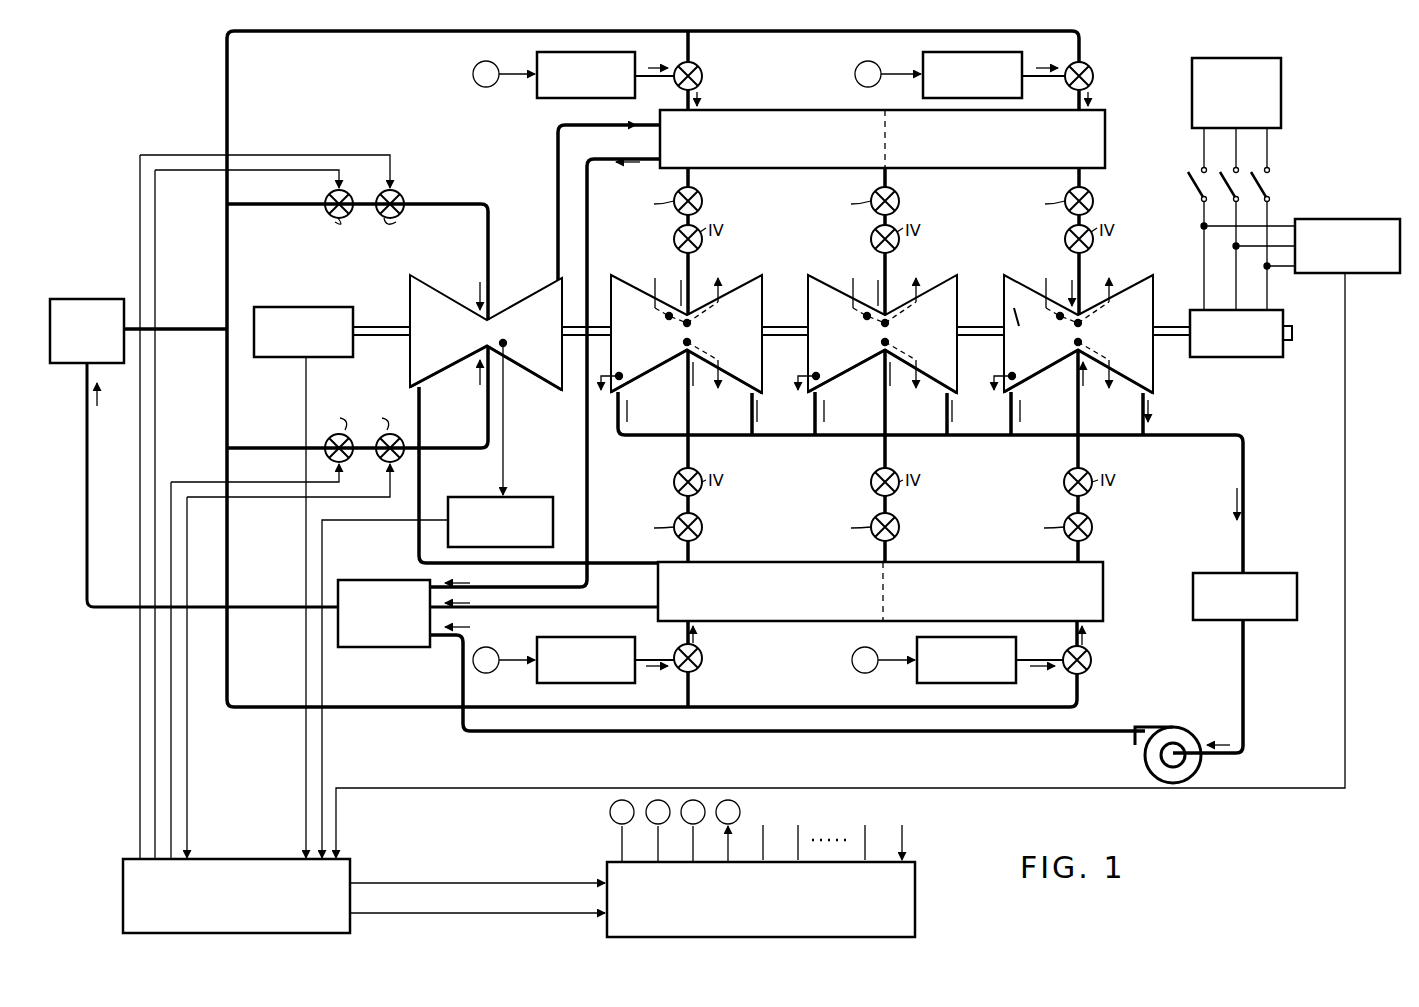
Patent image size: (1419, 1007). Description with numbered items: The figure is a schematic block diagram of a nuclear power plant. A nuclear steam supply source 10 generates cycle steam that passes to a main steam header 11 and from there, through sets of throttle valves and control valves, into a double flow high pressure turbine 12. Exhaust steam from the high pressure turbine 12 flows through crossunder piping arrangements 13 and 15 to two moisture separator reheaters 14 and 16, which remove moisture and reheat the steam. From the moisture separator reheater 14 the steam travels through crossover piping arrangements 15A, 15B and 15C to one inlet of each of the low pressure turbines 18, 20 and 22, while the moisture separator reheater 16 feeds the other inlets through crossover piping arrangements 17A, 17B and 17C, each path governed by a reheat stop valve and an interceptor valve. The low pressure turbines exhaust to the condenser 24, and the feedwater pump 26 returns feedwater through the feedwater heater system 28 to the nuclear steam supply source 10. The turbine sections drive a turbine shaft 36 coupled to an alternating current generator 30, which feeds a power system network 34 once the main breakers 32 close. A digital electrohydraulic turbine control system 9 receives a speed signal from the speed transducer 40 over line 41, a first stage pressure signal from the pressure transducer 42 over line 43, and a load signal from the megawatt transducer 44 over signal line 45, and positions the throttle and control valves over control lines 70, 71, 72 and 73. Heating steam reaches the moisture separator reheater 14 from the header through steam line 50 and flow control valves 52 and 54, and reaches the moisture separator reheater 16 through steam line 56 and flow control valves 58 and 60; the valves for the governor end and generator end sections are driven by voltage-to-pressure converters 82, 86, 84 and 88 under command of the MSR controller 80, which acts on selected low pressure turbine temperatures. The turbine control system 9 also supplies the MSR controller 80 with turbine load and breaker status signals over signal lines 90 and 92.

The digital electrohydraulic turbine control system 9 is at (350, 865).
The nuclear steam supply source 10 is at (90, 299).
The main steam header 11 is at (227, 364).
The double flow high pressure turbine 12 is at (554, 284).
The crossunder piping arrangement 13 is at (560, 158).
The moisture separator reheater 14 is at (885, 110).
The crossunder piping arrangement 15 is at (414, 550).
The crossover piping arrangement 15A is at (688, 181).
The crossover piping arrangement 15B is at (885, 181).
The crossover piping arrangement 15C is at (1079, 181).
The moisture separator reheater 16 is at (883, 621).
The crossover piping arrangement 17A is at (688, 544).
The crossover piping arrangement 17B is at (885, 544).
The crossover piping arrangement 17C is at (1078, 544).
The low pressure turbine 18 is at (760, 286).
The low pressure turbine 20 is at (955, 286).
The low pressure turbine 22 is at (1152, 286).
The condenser 24 is at (1288, 573).
The feedwater pump 26 is at (1178, 727).
The feedwater heater system 28 is at (362, 580).
The alternating current generator 30 is at (1268, 310).
The main breakers 32 is at (1272, 184).
The power system network 34 is at (1262, 58).
The turbine shaft 36 is at (976, 327).
The speed transducer 40 is at (298, 307).
The speed signal line 41 is at (308, 393).
The pressure transducer 42 is at (518, 497).
The pressure signal line 43 is at (366, 520).
The megawatt transducer 44 is at (1362, 219).
The load signal line 45 is at (470, 788).
The steam line 50 is at (229, 110).
The flow control valve 52 is at (702, 72).
The flow control valve 54 is at (1106, 62).
The steam line 56 is at (227, 674).
The flow control valve 58 is at (702, 660).
The flow control valve 60 is at (1091, 662).
The control line 70 is at (300, 173).
The control line 71 is at (376, 155).
The control line 72 is at (201, 475).
The control line 73 is at (252, 500).
The MSR controller 80 is at (915, 868).
The voltage-to-pressure converter 82 is at (545, 52).
The voltage-to-pressure converter 84 is at (572, 683).
The voltage-to-pressure converter 86 is at (923, 52).
The voltage-to-pressure converter 88 is at (957, 683).
The signal line 90 is at (527, 883).
The signal line 92 is at (527, 913).